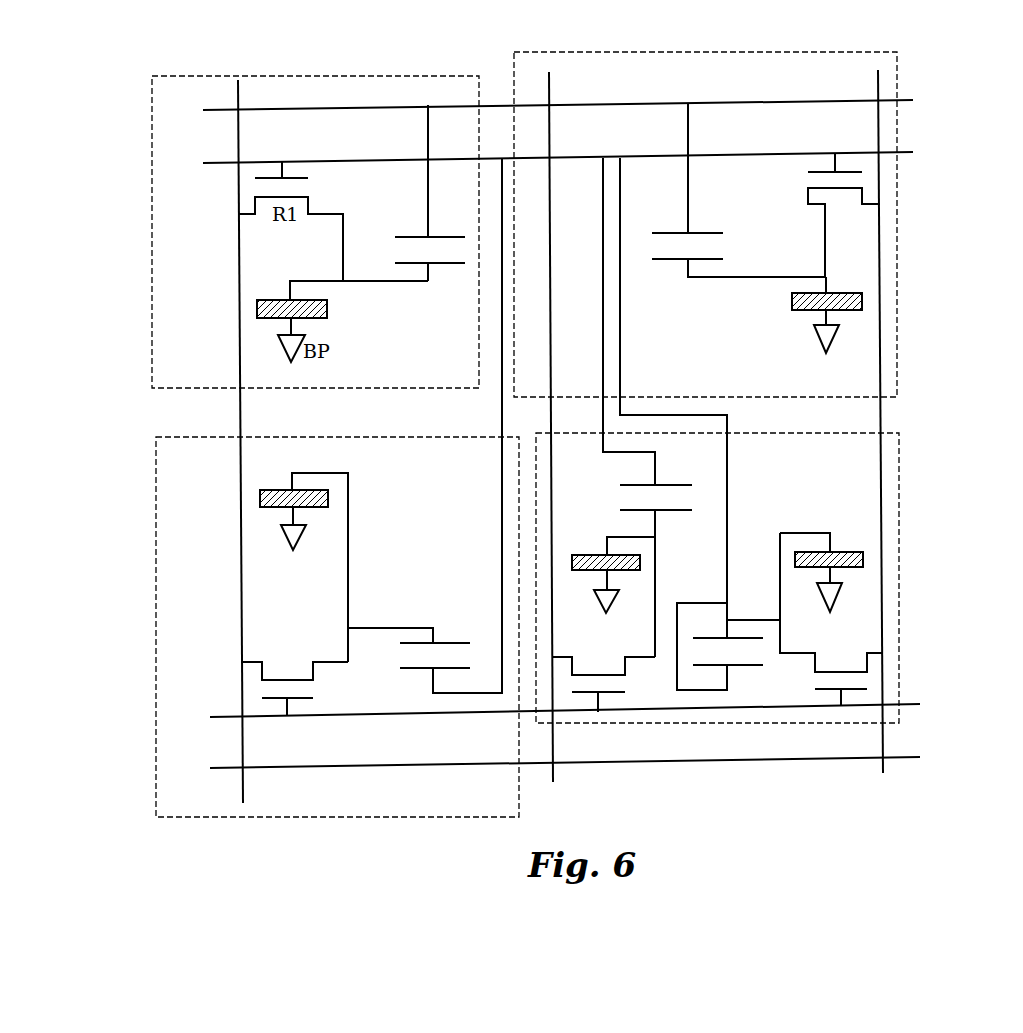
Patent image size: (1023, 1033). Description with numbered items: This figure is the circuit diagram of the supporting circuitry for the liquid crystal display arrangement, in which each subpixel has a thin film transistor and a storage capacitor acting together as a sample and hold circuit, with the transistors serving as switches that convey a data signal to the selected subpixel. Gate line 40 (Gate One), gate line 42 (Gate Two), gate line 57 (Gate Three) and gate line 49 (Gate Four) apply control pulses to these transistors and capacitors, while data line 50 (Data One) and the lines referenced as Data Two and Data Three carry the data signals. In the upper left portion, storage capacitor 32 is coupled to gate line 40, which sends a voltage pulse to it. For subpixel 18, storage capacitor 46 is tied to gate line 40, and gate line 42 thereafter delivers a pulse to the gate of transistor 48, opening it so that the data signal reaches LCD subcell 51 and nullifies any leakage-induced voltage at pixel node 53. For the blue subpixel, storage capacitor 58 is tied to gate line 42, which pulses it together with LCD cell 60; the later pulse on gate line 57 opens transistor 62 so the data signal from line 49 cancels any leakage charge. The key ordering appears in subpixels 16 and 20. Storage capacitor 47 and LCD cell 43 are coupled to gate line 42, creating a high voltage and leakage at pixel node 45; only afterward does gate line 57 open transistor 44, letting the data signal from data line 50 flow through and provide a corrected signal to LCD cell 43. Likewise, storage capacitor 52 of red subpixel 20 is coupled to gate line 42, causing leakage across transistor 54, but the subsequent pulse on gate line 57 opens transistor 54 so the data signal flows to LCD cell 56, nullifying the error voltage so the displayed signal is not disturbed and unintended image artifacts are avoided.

The subpixel 16 is at (150, 697).
The subpixel 18 is at (900, 118).
The subpixel element 20 is at (897, 725).
The storage capacitor 32 is at (423, 234).
The gate line 40 is at (188, 113).
The gate line 42 is at (193, 165).
The LCD cell 43 is at (325, 493).
The transistor 44 is at (305, 688).
The pixel node 45 is at (349, 607).
The storage capacitor 46 is at (693, 232).
The storage capacitor 47 is at (438, 638).
The transistor 48 is at (857, 172).
The gate line 49 is at (550, 72).
The data line 50 is at (254, 82).
The LCD subcell 51 is at (880, 70).
The storage capacitor 52 is at (715, 633).
The pixel node 53 is at (797, 303).
The transistor 54 is at (862, 640).
The LCD cell 56 is at (862, 552).
The gate line 57 is at (195, 720).
The storage capacitor 58 is at (672, 476).
The LCD cell 60 is at (636, 562).
The transistor 62 is at (582, 668).